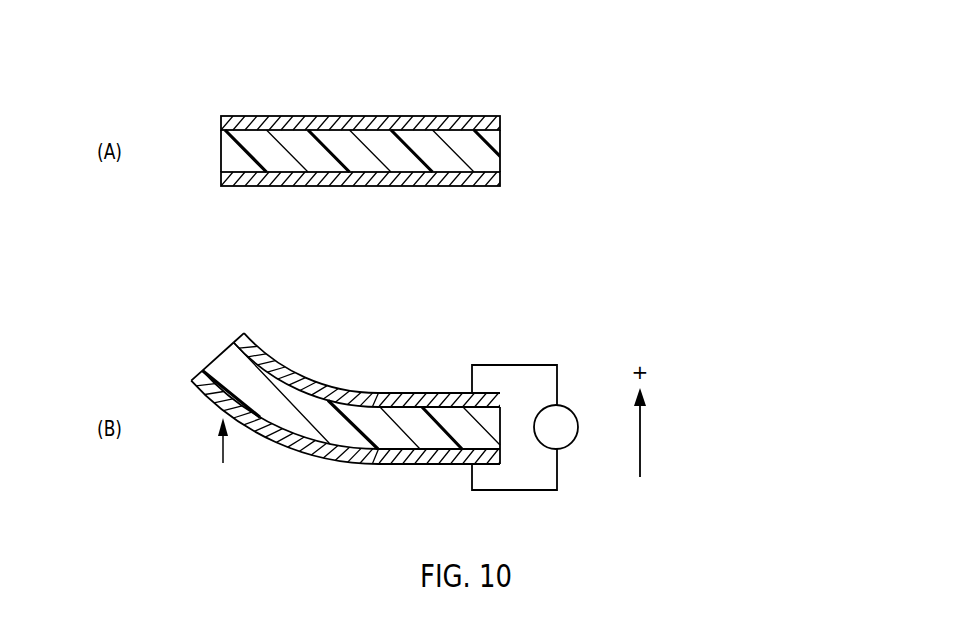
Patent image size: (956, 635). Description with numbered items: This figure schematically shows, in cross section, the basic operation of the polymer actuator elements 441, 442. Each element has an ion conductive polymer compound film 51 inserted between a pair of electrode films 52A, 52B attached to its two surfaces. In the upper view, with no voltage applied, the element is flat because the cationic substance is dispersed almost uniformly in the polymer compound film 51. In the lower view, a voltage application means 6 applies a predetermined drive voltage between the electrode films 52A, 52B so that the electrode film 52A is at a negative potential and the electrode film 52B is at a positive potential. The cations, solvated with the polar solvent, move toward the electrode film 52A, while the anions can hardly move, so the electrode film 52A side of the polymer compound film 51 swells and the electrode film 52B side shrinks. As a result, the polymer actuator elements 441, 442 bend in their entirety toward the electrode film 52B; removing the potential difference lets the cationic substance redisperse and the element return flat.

The polymer actuator element 441 is at (389, 279).
The polymer actuator element 442 is at (428, 67).
The electrode film 52B is at (499, 119).
The ion conductive polymer compound film 51 is at (499, 149).
The electrode film 52A is at (499, 175).
The voltage application means 6 is at (585, 462).